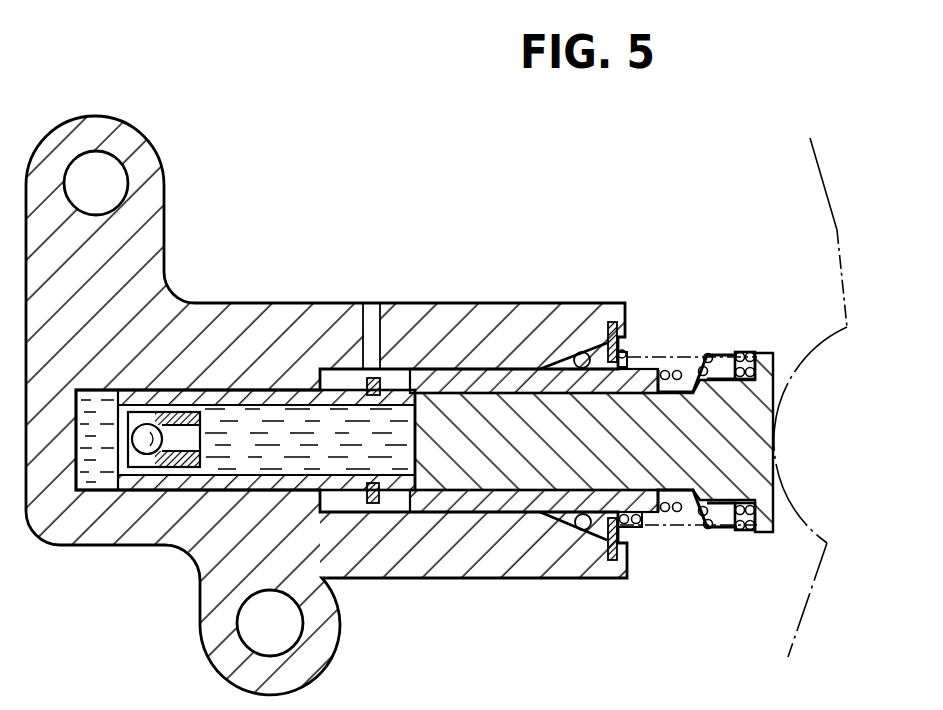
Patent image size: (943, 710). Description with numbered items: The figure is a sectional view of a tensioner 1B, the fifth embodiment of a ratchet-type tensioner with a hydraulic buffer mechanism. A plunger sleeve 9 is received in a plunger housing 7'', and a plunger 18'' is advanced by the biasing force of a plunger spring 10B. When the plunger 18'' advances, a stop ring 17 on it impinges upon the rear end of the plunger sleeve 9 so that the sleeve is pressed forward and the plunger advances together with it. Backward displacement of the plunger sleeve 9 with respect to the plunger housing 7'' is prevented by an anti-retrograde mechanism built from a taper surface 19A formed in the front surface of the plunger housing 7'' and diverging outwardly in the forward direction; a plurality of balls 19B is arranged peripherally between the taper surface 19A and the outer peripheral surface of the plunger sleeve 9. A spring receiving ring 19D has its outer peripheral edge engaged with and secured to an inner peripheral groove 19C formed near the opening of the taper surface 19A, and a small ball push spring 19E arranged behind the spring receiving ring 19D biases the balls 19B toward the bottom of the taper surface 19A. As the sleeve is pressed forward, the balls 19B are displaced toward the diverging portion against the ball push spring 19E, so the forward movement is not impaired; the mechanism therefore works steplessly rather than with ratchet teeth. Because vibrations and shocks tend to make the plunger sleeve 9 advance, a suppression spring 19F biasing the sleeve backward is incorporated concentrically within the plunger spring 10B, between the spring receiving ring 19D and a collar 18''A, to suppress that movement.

The tensioner 1B is at (277, 273).
The plunger housing 7'' is at (326, 405).
The plunger sleeve 9 is at (509, 503).
The plunger spring 10B is at (740, 351).
The stop ring 17 is at (375, 503).
The plunger 18'' is at (594, 503).
The collar 18''A is at (827, 397).
The taper surface 19A is at (593, 340).
The balls 19B is at (567, 352).
The inner peripheral groove 19C is at (630, 318).
The spring receiving ring 19D is at (630, 338).
The ball push spring 19E is at (601, 535).
The suppression spring 19F is at (664, 370).